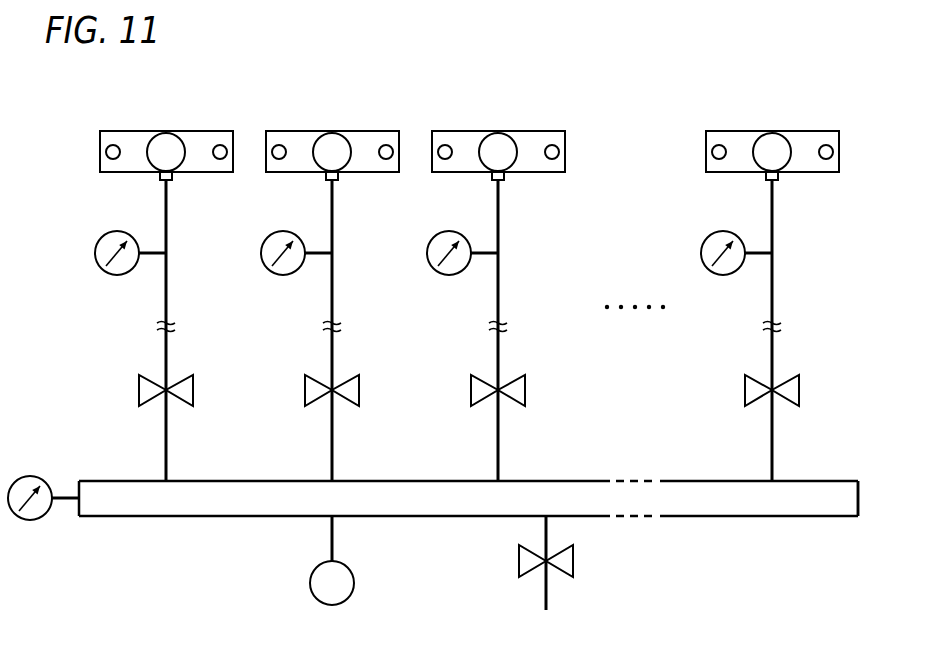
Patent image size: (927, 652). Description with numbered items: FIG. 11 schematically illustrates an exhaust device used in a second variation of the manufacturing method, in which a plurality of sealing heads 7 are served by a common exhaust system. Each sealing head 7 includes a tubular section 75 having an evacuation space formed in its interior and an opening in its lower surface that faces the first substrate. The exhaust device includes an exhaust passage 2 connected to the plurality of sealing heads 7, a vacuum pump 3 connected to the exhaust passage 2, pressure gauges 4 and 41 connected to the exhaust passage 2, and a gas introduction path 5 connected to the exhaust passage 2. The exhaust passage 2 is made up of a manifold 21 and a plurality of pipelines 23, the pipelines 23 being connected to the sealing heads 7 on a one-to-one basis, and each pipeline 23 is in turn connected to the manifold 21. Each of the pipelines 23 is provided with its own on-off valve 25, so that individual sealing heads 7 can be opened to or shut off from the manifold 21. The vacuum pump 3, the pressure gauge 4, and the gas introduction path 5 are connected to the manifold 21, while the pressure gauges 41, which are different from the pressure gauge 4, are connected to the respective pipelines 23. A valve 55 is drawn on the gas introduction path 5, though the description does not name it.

The exhaust passage 2 is at (832, 480).
The manifold 21 is at (860, 498).
The vacuum pump 3 is at (355, 583).
The pressure gauge 4 is at (30, 477).
The gas introduction path 5 is at (549, 587).
The drain valve 55 is at (575, 562).
The sealing head 7 is at (208, 135).
The tubular section 75 is at (166, 142).
The pipeline 23 is at (169, 289).
The on-off valve 25 is at (138, 390).
The pressure gauge 41 is at (94, 247).